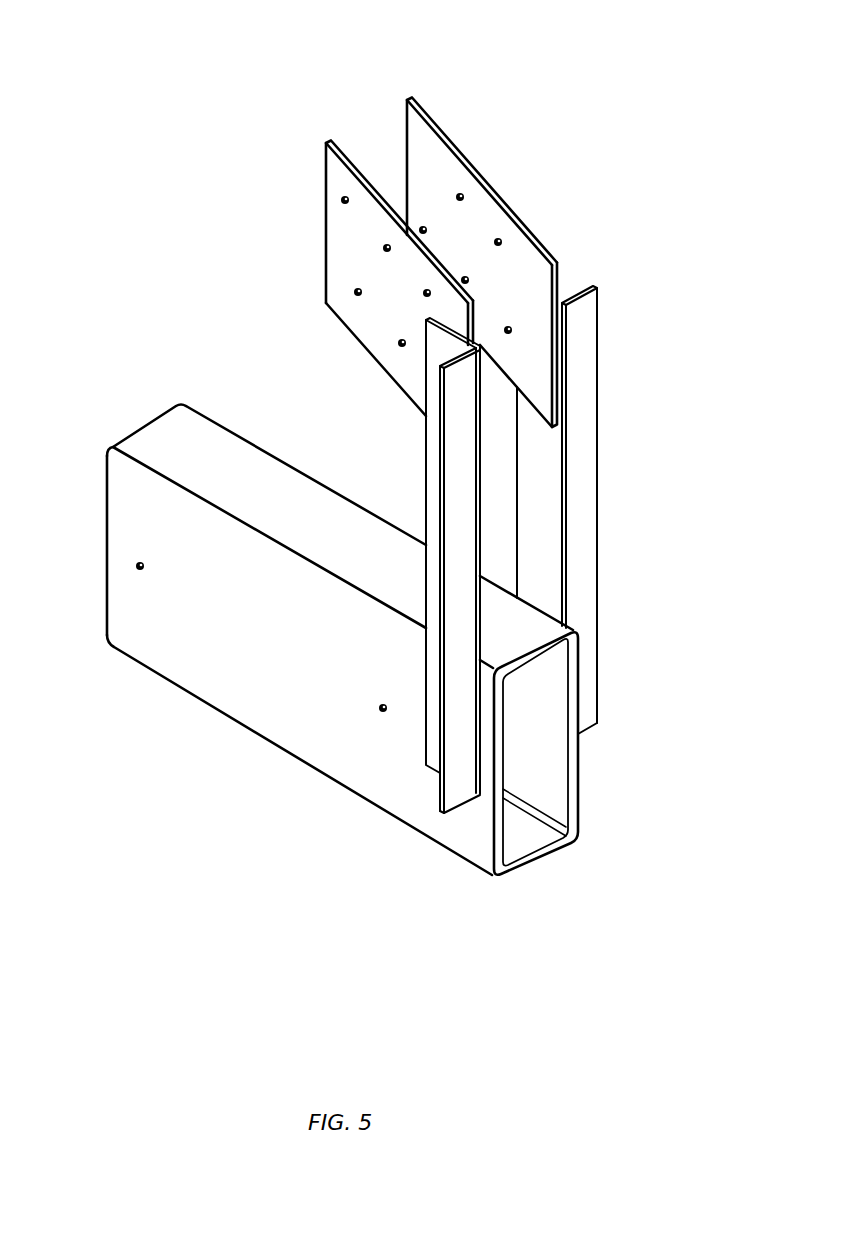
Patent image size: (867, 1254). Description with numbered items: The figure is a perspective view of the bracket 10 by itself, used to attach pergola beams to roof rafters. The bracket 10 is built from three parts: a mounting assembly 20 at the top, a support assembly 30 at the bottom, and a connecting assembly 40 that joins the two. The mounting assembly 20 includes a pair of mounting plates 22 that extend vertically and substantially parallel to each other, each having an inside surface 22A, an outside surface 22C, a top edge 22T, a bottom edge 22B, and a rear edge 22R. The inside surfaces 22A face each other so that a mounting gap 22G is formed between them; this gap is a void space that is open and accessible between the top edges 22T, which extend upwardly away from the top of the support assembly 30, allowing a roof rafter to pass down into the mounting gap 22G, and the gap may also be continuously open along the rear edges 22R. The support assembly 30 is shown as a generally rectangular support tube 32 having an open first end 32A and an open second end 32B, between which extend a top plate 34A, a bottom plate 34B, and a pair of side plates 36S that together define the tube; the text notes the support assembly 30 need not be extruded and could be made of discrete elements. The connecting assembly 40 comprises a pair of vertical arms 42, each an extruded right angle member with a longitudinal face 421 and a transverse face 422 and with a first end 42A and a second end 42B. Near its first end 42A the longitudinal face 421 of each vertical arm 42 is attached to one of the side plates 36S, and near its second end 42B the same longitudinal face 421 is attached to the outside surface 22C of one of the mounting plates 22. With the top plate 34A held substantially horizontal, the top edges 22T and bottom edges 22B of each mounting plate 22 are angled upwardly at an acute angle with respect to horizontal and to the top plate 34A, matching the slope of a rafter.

The bracket 10 is at (277, 790).
The mounting assembly 20 is at (326, 329).
The mounting plates 22 is at (325, 250).
The inside surface 22A is at (352, 160).
The bottom edge 22B is at (366, 351).
The outside surface 22C is at (337, 215).
The mounting gap 22G is at (380, 159).
The rear edge 22R is at (325, 183).
The top edge 22T is at (407, 210).
The support assembly 30 is at (197, 700).
The support tube 32 is at (345, 673).
The first end 32A is at (498, 877).
The second end 32B is at (106, 480).
The top plate 34A is at (243, 465).
The bottom plate 34B is at (545, 860).
The side plates 36S is at (370, 753).
The connecting assembly 40 is at (606, 539).
The vertical arms 42 is at (426, 489).
The first end 42A is at (463, 800).
The second end 42B is at (461, 345).
The longitudinal face 421 is at (435, 449).
The transverse face 422 is at (467, 457).